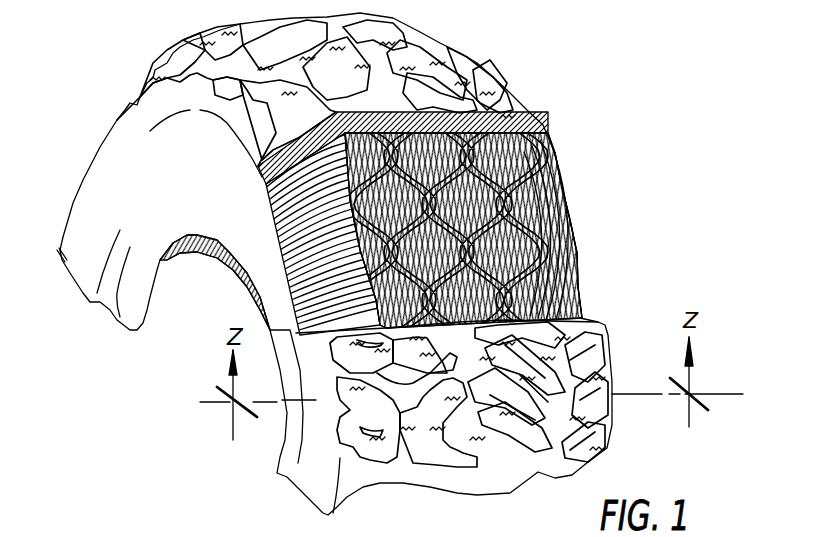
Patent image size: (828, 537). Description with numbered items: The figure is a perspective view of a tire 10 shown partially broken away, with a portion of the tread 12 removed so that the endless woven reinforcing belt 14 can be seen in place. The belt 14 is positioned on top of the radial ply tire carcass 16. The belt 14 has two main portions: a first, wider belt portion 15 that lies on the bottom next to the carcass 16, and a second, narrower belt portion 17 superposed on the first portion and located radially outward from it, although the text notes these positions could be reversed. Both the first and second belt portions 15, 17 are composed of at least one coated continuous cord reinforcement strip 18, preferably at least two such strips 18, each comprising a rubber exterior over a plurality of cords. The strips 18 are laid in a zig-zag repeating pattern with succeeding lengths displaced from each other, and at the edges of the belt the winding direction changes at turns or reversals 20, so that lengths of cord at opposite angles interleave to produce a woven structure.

The tire 10 is at (497, 58).
The tread 12 is at (519, 94).
The reinforcing belt 14 is at (543, 262).
The first belt portion 15 is at (548, 232).
The radial ply tire carcass 16 is at (270, 303).
The second belt portion 17 is at (500, 173).
The coated continuous cord reinforcement strip 18 is at (580, 305).
The turn or reversal 20 is at (543, 258).